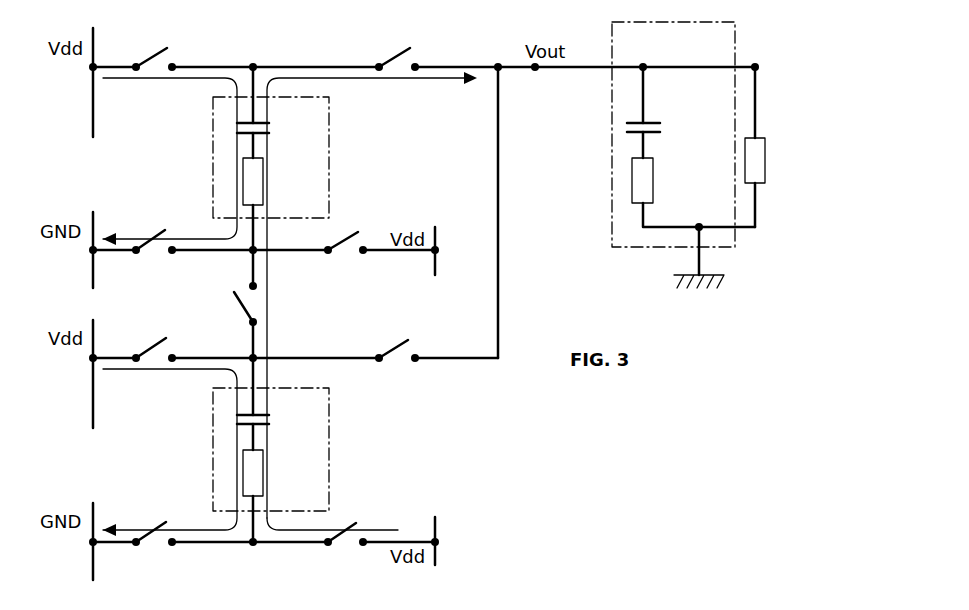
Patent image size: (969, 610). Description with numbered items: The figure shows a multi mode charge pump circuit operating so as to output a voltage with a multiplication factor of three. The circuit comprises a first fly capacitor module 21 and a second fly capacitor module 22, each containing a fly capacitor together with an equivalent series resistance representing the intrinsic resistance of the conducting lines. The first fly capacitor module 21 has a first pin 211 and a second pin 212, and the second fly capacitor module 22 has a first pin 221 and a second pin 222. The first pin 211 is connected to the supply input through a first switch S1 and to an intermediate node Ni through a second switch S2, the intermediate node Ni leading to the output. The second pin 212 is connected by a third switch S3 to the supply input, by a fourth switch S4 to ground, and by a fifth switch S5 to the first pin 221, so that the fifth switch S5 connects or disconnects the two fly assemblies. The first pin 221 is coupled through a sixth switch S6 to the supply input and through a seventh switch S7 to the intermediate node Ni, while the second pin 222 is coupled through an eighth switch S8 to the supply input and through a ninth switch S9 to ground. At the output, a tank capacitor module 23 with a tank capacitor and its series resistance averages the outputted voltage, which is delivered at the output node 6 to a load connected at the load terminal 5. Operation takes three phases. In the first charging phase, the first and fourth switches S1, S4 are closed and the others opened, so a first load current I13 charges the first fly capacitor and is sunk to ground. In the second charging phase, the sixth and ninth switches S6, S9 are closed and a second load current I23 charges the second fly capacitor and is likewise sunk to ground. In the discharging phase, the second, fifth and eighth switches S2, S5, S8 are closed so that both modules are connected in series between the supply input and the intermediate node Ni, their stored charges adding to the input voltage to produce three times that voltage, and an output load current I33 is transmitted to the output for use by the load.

The load terminal 5 is at (757, 65).
The output node Vout 6 is at (535, 67).
The first fly capacitor module 21 is at (332, 164).
The second fly capacitor module 22 is at (332, 456).
The tank capacitor module 23 is at (610, 147).
The first pin of the first fly capacitor module 211 is at (258, 80).
The second pin of the first fly capacitor module 212 is at (255, 228).
The first pin of the second fly capacitor module 221 is at (255, 382).
The second pin of the second fly capacitor module 222 is at (256, 524).
The first switch S1 is at (164, 50).
The second switch S2 is at (407, 50).
The third switch S3 is at (342, 243).
The fourth switch S4 is at (148, 243).
The fifth switch S5 is at (245, 308).
The sixth switch S6 is at (148, 351).
The seventh switch S7 is at (396, 353).
The eighth switch S8 is at (340, 534).
The ninth switch S9 is at (148, 535).
The first load current I13 is at (210, 78).
The second load current I23 is at (212, 533).
The output load current I33 is at (432, 78).
The intermediate node Ni is at (498, 67).